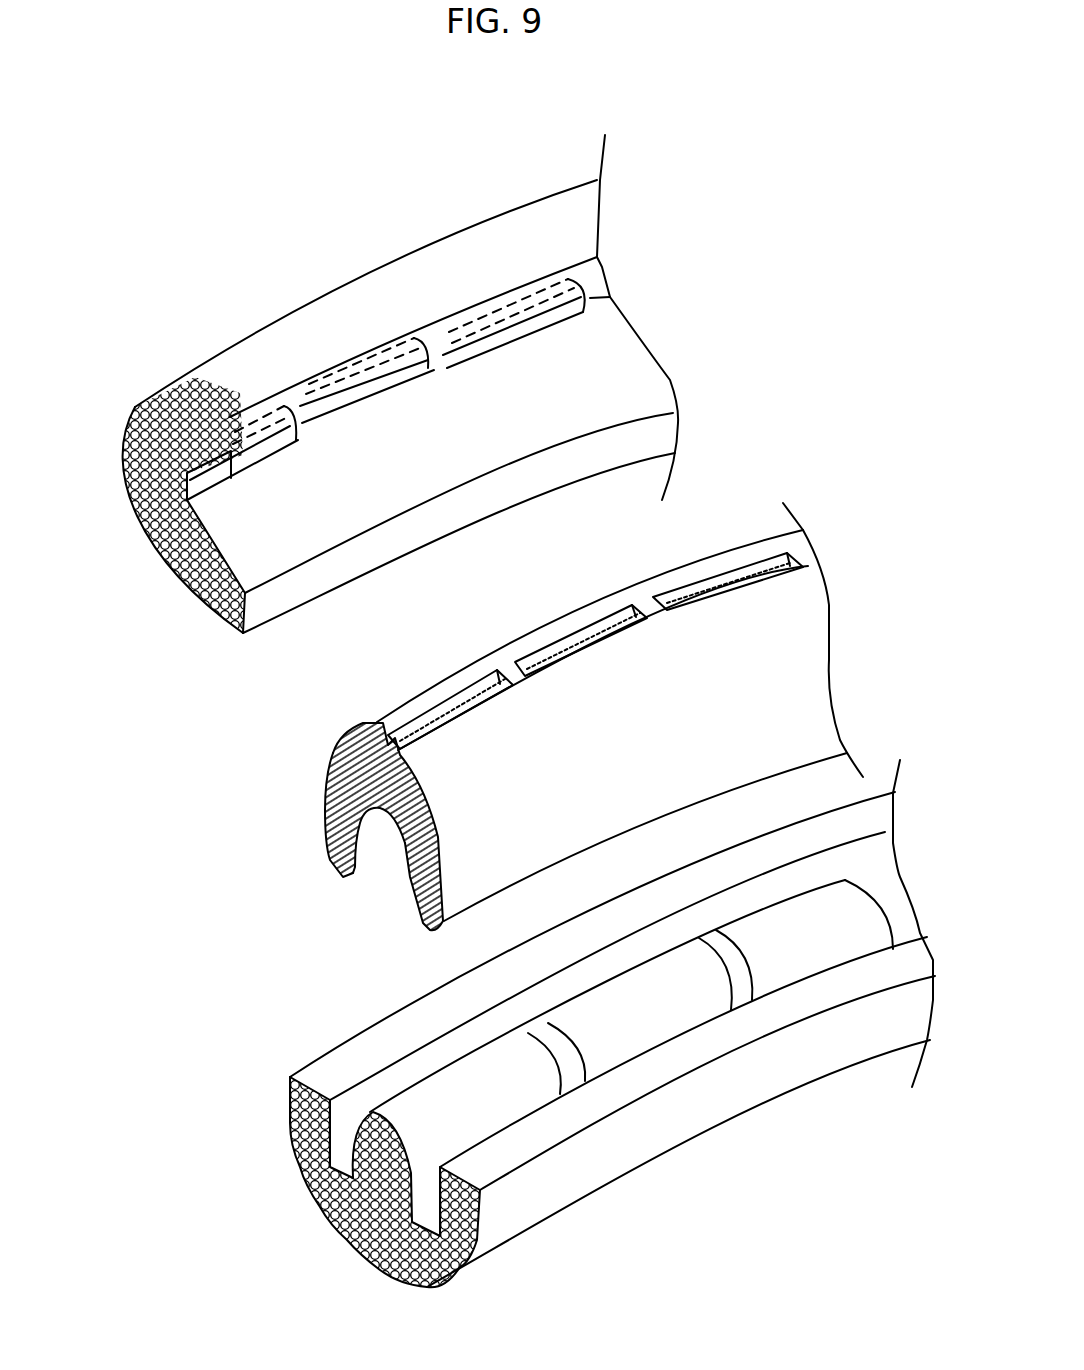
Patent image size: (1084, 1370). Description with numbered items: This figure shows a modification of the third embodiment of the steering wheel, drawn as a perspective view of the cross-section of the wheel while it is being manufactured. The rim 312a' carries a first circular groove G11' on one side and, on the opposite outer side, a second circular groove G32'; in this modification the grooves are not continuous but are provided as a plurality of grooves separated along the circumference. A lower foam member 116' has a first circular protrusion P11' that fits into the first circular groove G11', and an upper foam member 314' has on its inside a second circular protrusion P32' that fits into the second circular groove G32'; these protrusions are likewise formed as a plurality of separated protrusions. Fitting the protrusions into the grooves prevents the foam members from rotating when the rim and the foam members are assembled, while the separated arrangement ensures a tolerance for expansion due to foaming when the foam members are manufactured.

The second circular protrusion P32' is at (382, 389).
The upper foam member 314' is at (160, 479).
The second circular groove G32' is at (474, 654).
The rim 312a' is at (513, 716).
The first circular groove G11' is at (282, 850).
The first circular protrusion P11' is at (541, 1051).
The lower foam member 116' is at (320, 1182).